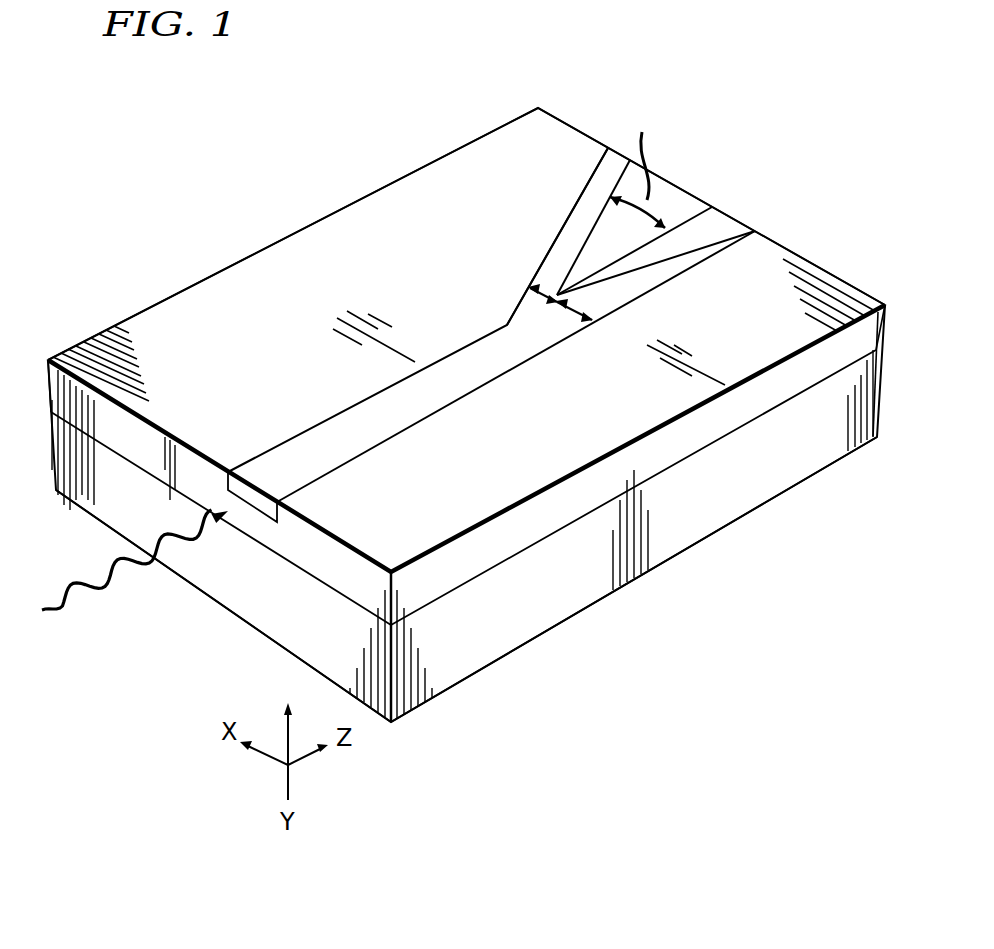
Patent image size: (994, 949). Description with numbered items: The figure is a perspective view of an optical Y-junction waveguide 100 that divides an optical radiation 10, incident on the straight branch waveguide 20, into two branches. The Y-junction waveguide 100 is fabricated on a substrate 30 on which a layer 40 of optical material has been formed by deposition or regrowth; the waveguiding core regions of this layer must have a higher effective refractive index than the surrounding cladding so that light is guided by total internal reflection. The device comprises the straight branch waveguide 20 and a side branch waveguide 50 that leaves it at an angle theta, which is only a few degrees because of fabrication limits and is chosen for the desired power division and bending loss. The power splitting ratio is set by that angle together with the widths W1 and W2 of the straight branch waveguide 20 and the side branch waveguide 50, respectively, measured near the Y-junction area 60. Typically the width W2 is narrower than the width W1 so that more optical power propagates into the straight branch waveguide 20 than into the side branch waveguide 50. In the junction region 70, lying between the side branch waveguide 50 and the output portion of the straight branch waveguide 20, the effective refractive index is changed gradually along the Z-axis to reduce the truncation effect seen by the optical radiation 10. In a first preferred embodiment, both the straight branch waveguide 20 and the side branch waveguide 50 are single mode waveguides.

The optical Y-junction waveguide 100 is at (345, 100).
The optical radiation 10 is at (123, 578).
The straight branch waveguide 20 is at (345, 405).
The substrate 30 is at (833, 428).
The layer of optical material 40 is at (858, 342).
The side branch waveguide 50 is at (583, 183).
The Y-junction area 60 is at (542, 320).
The junction region 70 is at (683, 202).
The width of straight branch waveguide W1 is at (594, 318).
The width of side branch waveguide W2 is at (533, 282).